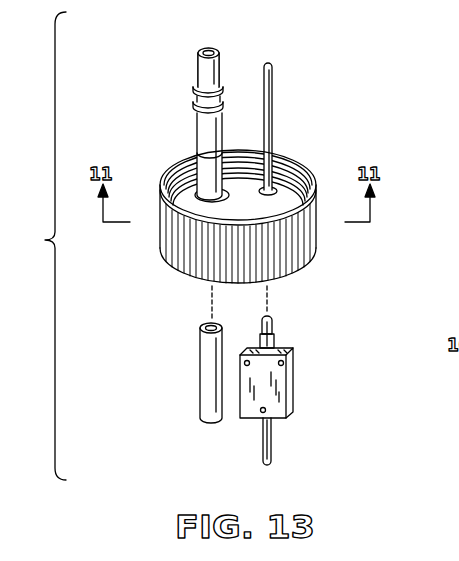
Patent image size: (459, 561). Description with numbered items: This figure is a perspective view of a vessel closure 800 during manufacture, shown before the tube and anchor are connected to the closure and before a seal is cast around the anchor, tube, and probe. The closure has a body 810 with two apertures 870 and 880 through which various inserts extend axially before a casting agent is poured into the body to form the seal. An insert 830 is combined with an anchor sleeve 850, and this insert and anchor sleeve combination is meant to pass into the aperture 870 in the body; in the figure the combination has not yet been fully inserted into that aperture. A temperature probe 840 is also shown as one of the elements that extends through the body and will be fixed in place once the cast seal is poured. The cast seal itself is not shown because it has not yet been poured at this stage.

The vessel closure 800 is at (158, 46).
The body 810 is at (275, 121).
The insert 830 is at (221, 53).
The temperature probe 840 is at (293, 397).
The anchor sleeve 850 is at (193, 110).
The aperture 870 is at (197, 190).
The aperture 880 is at (273, 187).